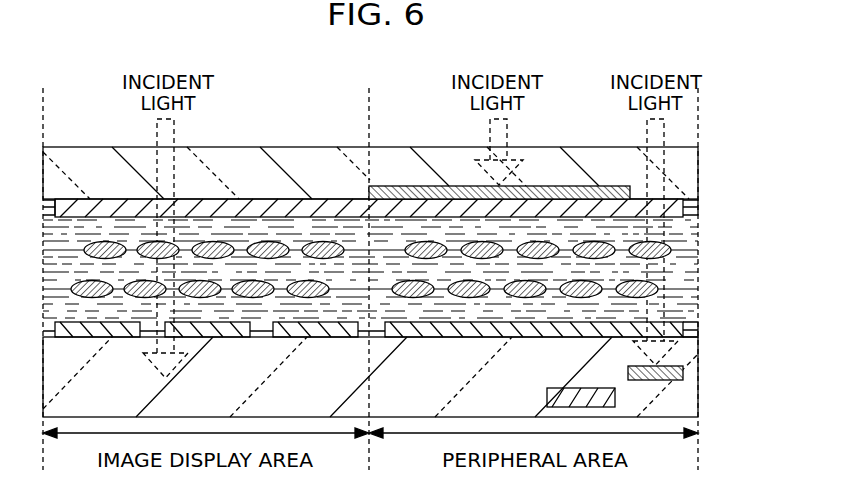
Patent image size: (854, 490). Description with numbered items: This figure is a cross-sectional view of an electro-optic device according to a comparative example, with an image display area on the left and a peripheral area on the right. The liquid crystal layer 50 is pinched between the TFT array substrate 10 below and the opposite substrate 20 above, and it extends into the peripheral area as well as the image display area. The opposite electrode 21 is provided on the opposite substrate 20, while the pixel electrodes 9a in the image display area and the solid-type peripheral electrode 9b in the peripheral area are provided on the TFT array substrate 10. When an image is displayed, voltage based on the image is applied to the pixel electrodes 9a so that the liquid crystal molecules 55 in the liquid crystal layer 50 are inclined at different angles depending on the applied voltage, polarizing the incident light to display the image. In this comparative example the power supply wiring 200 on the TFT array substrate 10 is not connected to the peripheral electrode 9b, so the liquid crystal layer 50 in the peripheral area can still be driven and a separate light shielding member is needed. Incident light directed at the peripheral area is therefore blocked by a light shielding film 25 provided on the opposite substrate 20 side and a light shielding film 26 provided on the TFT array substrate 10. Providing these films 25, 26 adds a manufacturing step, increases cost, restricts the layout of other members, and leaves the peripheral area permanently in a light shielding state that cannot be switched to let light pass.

The opposite substrate 20 is at (693, 168).
The opposite electrode 21 is at (685, 207).
The light shielding film 25 is at (586, 186).
The liquid crystal layer 50 is at (692, 263).
The liquid crystal molecules 55 is at (325, 245).
The pixel electrode 9a is at (120, 337).
The peripheral electrode 9b is at (685, 330).
The TFT array substrate 10 is at (693, 398).
The light shielding film 26 is at (683, 372).
The power supply wiring 200 is at (553, 397).